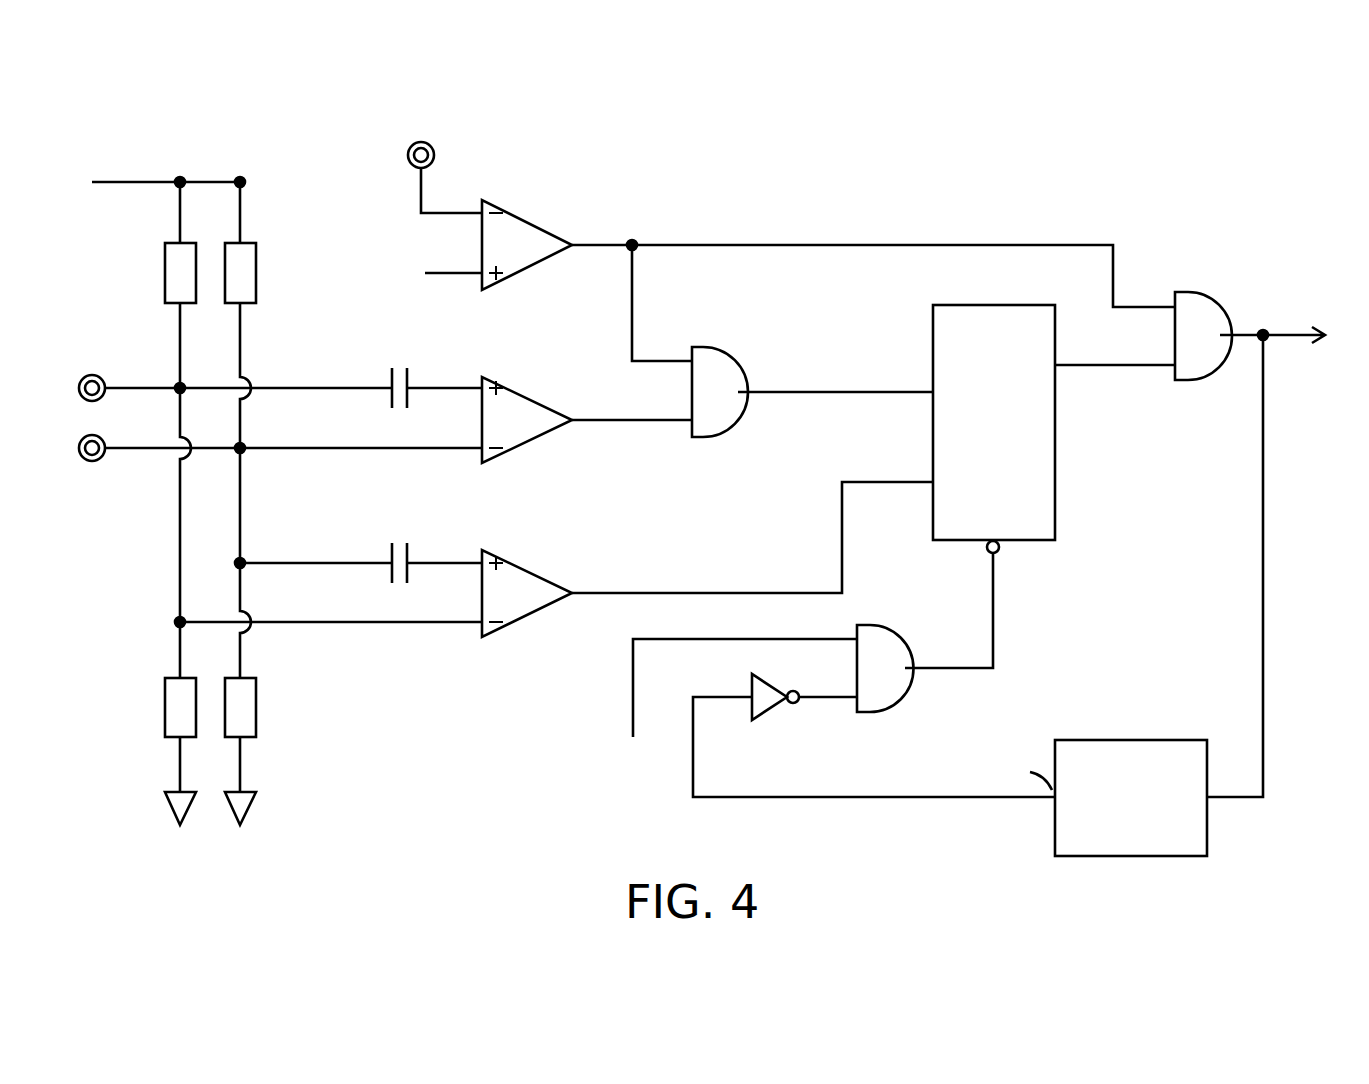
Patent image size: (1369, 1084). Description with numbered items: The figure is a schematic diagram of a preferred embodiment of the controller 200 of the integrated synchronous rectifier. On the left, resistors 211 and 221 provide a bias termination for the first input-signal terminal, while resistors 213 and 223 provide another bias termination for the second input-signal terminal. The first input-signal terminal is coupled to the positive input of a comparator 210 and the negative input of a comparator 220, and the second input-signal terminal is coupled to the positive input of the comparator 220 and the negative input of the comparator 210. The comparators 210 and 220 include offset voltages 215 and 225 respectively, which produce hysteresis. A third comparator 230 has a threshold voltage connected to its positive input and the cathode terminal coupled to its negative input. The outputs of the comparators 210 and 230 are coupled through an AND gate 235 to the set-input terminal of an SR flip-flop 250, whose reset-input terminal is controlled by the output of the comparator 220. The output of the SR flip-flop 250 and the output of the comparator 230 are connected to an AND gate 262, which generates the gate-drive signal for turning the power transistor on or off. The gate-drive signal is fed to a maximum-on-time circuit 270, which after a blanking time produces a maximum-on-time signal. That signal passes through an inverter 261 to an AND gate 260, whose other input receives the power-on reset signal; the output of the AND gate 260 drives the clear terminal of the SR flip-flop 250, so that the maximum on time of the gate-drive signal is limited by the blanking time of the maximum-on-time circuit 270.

The controller 200 is at (1347, 190).
The resistor 211 is at (165, 270).
The resistor 213 is at (256, 270).
The resistor 221 is at (165, 705).
The resistor 223 is at (256, 705).
The offset voltage 215 is at (403, 372).
The offset voltage 225 is at (403, 547).
The comparator 210 is at (528, 396).
The comparator 220 is at (528, 570).
The third comparator 230 is at (528, 218).
The AND gate 235 is at (705, 347).
The SR flip-flop 250 is at (1055, 450).
The AND gate 260 is at (872, 625).
The inverter 261 is at (770, 710).
The AND gate 262 is at (1190, 292).
The maximum-on-time circuit 270 is at (1116, 740).